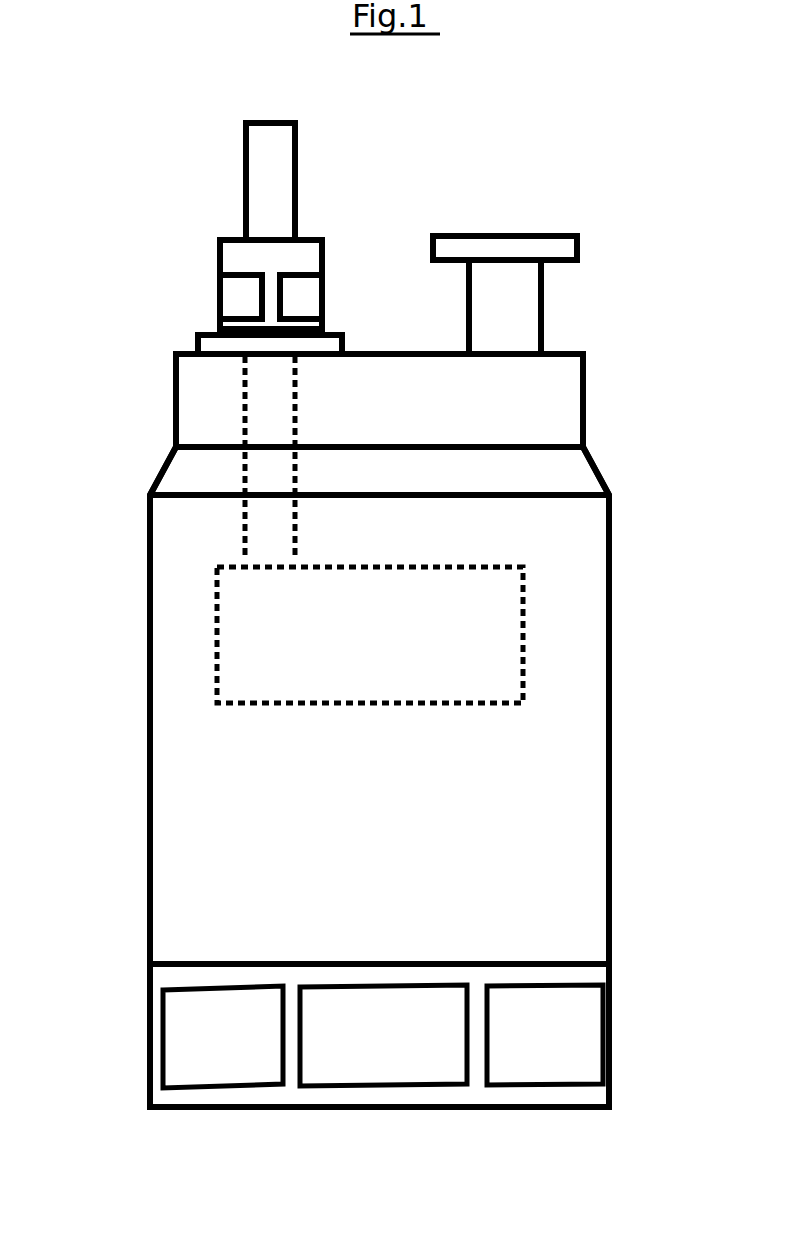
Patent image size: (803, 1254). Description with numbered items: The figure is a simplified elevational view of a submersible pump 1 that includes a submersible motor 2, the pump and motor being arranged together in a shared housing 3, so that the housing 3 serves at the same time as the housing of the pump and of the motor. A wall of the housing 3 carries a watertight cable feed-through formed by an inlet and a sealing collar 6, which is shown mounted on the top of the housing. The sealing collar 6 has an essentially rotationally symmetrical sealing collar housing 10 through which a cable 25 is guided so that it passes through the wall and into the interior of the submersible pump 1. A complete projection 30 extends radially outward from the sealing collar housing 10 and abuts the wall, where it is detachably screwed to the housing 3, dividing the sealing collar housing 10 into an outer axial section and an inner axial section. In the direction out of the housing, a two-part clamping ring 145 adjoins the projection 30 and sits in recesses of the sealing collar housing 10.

The submersible pump 1 is at (518, 166).
The submersible motor 2 is at (523, 642).
The housing 3 is at (151, 470).
The sealing collar 6 is at (207, 252).
The sealing collar housing 10 is at (303, 258).
The clamping ring 145 is at (305, 305).
The cable 25 is at (272, 173).
The projection 30 is at (205, 350).